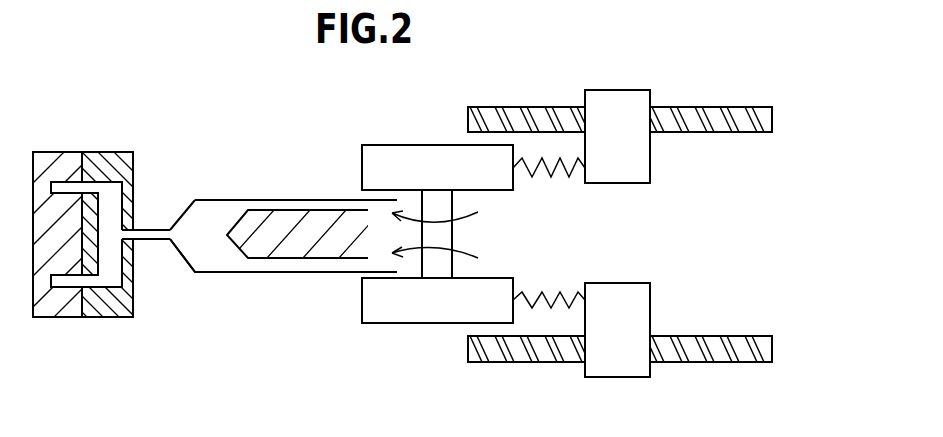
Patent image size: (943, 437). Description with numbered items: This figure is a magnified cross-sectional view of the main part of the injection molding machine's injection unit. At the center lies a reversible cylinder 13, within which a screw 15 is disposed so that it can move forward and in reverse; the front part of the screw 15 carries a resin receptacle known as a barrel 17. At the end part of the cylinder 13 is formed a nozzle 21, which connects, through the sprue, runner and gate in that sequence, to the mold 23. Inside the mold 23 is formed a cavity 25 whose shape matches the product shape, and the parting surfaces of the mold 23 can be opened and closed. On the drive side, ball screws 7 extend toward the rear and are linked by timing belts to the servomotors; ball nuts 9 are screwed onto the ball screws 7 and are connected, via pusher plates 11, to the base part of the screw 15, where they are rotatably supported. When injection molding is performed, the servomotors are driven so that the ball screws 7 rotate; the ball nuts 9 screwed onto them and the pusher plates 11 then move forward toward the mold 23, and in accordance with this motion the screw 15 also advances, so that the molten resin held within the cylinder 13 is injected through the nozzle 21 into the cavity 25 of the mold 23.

The ball screw 7 is at (674, 107).
The ball nut 9 is at (645, 163).
The pusher plate 11 is at (387, 163).
The cylinder 13 is at (290, 284).
The screw 15 is at (285, 223).
The barrel 17 is at (186, 250).
The nozzle 21 is at (152, 227).
The mold 23 is at (96, 139).
The cavity 25 is at (70, 284).